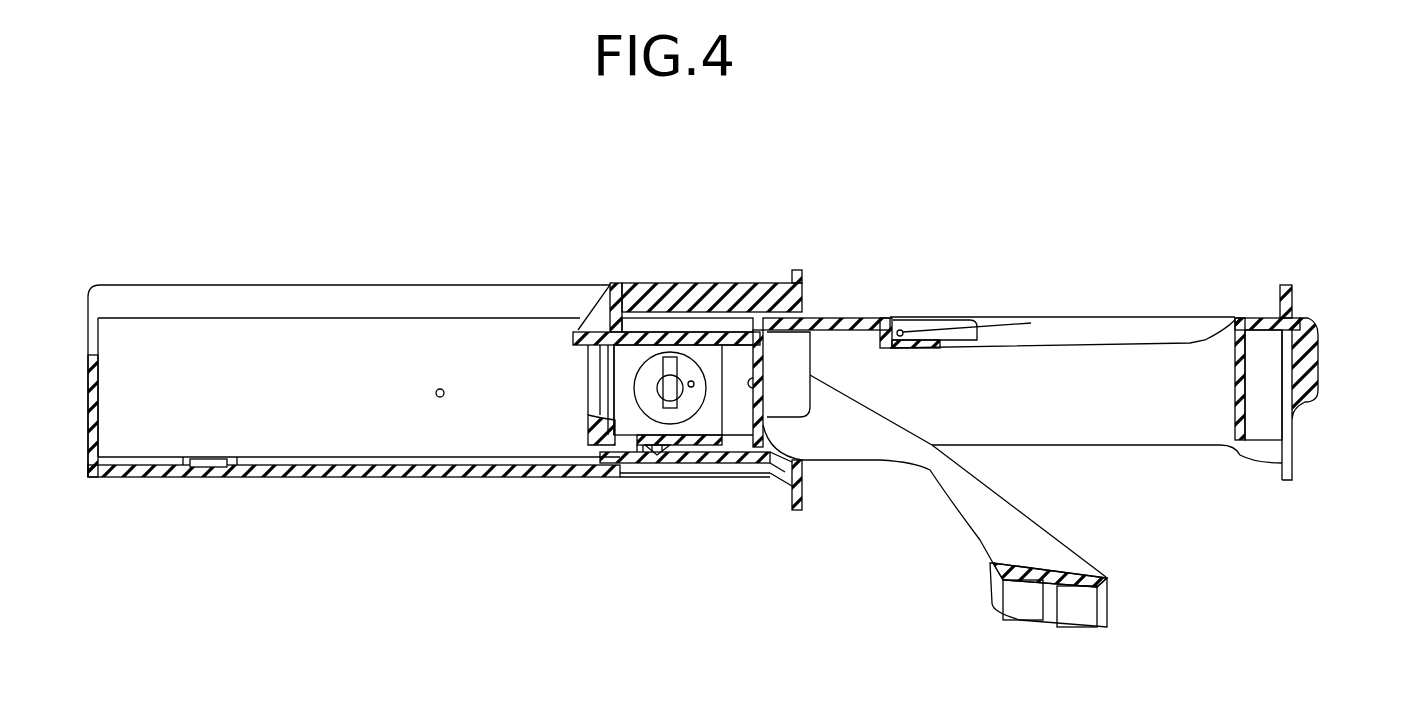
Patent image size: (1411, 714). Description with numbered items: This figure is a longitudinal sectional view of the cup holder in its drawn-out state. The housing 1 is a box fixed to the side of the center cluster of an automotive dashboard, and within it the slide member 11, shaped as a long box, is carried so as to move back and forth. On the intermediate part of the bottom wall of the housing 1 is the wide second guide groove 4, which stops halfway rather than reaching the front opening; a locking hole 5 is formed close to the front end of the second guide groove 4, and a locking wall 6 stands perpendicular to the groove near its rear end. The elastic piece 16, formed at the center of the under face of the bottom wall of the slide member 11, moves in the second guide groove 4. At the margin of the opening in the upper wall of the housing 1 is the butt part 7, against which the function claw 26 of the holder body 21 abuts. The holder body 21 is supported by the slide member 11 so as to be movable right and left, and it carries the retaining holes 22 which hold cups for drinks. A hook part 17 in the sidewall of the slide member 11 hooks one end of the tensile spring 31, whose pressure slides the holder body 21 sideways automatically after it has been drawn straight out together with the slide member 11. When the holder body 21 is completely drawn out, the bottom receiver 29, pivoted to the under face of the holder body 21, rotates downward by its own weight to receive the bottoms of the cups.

The housing 1 is at (316, 254).
The second guide groove 4 is at (325, 463).
The locking hole 5 is at (668, 461).
The locking wall 6 is at (230, 460).
The butt part 7 is at (641, 298).
The slide member 11 is at (568, 394).
The elastic piece 16 is at (662, 457).
The hook part 17 is at (693, 381).
The holder body 21 is at (1336, 326).
The retaining holes 22 is at (1123, 333).
The function claw 26 is at (594, 315).
The bottom receiver 29 is at (1053, 552).
The tensile spring 31 is at (683, 392).